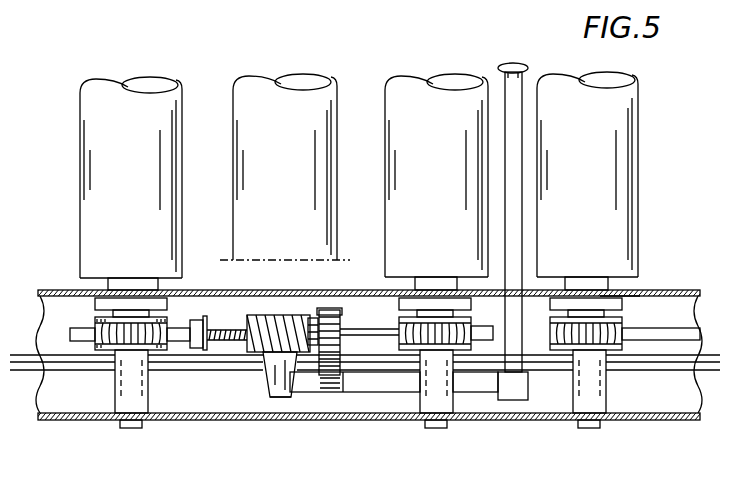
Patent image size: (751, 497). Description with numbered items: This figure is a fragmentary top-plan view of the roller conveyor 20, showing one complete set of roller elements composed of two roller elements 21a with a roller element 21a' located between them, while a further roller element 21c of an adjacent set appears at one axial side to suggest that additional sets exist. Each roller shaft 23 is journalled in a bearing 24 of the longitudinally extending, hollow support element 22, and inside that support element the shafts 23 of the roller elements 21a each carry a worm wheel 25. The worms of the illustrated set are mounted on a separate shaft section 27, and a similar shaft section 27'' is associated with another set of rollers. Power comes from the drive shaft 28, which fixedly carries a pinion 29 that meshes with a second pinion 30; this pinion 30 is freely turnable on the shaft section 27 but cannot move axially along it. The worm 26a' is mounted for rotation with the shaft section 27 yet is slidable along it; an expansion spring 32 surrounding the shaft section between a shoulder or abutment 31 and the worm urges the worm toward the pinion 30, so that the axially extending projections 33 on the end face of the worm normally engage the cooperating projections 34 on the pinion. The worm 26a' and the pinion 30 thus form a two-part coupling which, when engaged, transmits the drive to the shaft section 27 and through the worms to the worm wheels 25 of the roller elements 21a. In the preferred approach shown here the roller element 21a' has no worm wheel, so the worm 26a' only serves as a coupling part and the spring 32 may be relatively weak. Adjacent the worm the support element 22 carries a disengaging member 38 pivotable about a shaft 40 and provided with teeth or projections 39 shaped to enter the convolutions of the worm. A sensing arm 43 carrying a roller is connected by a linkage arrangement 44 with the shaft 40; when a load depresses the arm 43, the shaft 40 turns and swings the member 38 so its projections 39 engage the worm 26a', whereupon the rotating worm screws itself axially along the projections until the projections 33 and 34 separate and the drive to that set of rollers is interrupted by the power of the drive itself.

The roller conveyor 20 is at (276, 437).
The roller element 21a is at (284, 149).
The roller element 21a' is at (285, 135).
The roller element 21c is at (627, 112).
The support element 22 is at (690, 421).
The shaft 23 is at (133, 428).
The bearing 24 is at (622, 292).
The worm wheel 25 is at (95, 343).
The worm 26a' is at (254, 380).
The shaft section 27 is at (234, 393).
The shaft section 27'' is at (668, 293).
The drive shaft 28 is at (548, 362).
The pinion 29 is at (350, 393).
The pinion 30 is at (325, 309).
The shoulder or abutment 31 is at (197, 318).
The expansion spring 32 is at (216, 328).
The projections 33 is at (313, 316).
The projections 34 is at (330, 318).
The disengaging member 38 is at (272, 392).
The teeth or projections 39 is at (288, 315).
The shaft 40 is at (300, 392).
The arm 43 is at (522, 66).
The linkage arrangement 44 is at (512, 192).